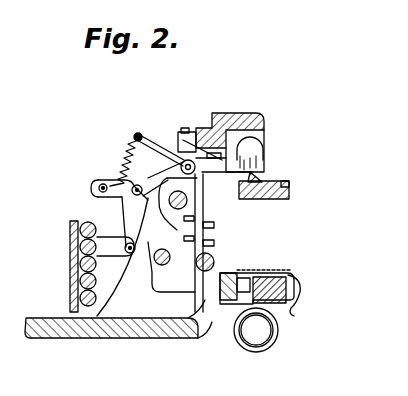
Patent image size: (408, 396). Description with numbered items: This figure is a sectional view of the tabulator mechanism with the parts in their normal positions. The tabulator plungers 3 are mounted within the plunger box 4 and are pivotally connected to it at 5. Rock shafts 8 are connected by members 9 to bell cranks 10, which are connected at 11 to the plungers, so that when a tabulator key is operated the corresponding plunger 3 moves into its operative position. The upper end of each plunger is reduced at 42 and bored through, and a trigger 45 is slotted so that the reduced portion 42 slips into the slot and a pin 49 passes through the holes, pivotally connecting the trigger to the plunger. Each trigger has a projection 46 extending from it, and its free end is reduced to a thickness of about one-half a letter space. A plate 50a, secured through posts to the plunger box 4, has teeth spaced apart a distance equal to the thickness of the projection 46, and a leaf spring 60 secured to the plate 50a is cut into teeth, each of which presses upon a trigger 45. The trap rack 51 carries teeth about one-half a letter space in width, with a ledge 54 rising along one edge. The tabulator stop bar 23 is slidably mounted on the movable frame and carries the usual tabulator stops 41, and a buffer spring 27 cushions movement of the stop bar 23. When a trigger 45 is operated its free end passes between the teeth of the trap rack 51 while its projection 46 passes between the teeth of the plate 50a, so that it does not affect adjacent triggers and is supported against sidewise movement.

The tabulator plungers 3 is at (181, 267).
The plunger box 4 is at (118, 268).
The pivotal connection 5 is at (210, 200).
The rock shafts 8 is at (88, 220).
The members 9 is at (116, 247).
The bell cranks 10 is at (119, 213).
The connection of bell cranks to plungers 11 is at (137, 185).
The tabulator stop bar 23 is at (294, 312).
The buffer spring 27 is at (278, 340).
The tabulator stops 41 is at (257, 271).
The reduced portion of plunger 42 is at (224, 177).
The triggers 45 is at (262, 172).
The projections 46 is at (260, 138).
The pin 49 is at (163, 150).
The plate 50a is at (238, 114).
The trap rack 51 is at (292, 195).
The ledge 54 is at (290, 181).
The leaf spring 60 is at (170, 150).